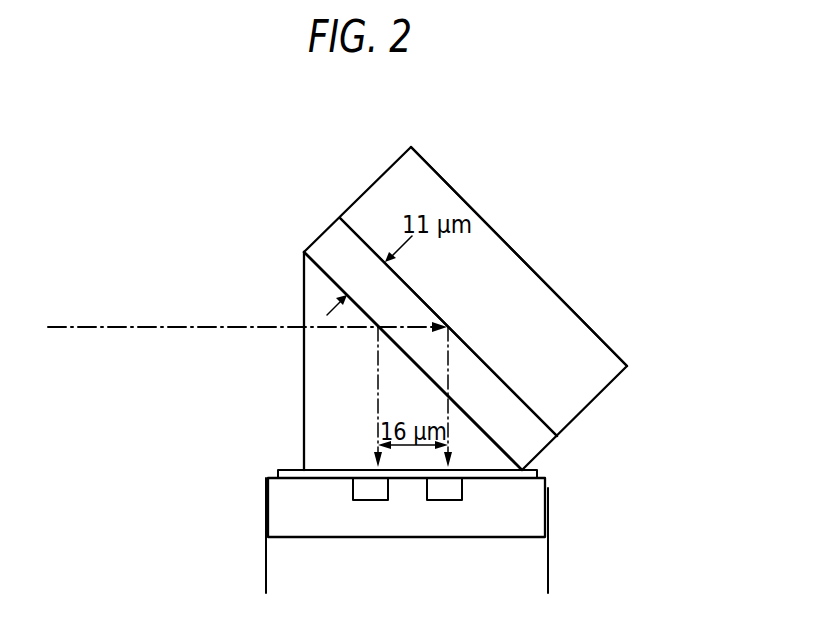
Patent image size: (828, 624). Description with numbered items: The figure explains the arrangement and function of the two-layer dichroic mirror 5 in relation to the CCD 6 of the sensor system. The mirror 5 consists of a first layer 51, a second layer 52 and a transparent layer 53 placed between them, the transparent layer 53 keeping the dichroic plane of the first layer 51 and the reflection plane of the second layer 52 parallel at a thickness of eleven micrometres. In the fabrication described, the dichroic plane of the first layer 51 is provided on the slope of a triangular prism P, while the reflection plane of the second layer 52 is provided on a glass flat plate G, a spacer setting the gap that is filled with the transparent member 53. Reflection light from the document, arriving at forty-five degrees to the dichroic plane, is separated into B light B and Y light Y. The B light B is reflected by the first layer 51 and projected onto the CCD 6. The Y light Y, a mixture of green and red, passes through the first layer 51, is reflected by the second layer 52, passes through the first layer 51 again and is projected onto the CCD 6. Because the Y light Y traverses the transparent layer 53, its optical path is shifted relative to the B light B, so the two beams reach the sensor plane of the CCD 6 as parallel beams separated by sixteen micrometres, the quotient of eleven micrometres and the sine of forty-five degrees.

The two-layer dichroic mirror 5 is at (553, 253).
The CCD 6 is at (530, 513).
The first layer 51 is at (319, 270).
The second layer 52 is at (356, 232).
The transparent layer 53 is at (332, 240).
The glass flat plate G is at (590, 350).
The triangular prism P is at (317, 402).
The B light B is at (348, 371).
The Y light Y is at (413, 397).